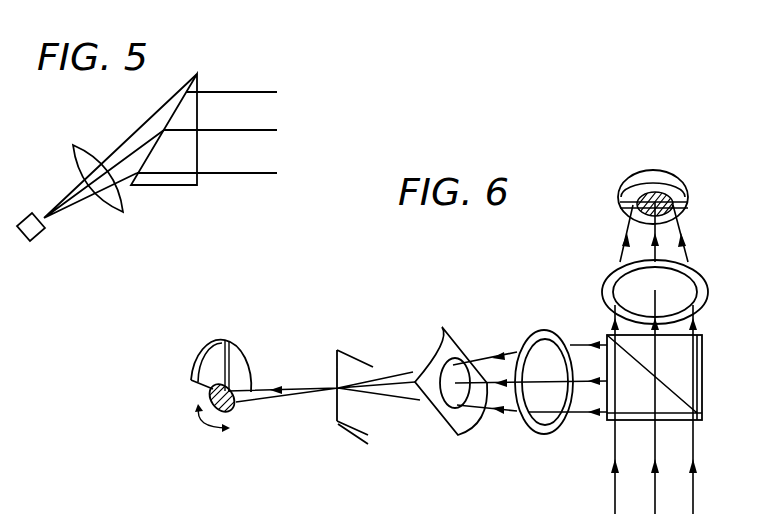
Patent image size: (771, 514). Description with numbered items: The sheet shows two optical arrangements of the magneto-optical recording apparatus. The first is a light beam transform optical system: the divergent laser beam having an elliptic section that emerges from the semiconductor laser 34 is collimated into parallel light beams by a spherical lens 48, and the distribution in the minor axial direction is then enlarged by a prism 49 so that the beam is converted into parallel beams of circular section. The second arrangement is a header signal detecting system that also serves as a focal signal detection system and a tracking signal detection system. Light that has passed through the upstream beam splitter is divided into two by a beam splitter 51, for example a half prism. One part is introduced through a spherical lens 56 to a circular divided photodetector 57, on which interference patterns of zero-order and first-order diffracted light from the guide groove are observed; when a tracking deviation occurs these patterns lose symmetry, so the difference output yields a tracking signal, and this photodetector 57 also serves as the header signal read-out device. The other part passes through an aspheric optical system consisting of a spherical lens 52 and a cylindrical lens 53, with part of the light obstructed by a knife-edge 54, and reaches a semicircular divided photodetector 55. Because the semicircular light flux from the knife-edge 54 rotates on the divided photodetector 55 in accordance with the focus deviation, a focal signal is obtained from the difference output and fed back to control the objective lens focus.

In FIG. 5, the semiconductor laser 34 is at (36, 238).
In FIG. 5, the spherical lens 48 is at (87, 147).
In FIG. 5, the prism 49 is at (200, 80).
In FIG. 6, the beam splitter 51 is at (703, 380).
In FIG. 6, the spherical lens 52 is at (548, 331).
In FIG. 6, the cylindrical lens 53 is at (445, 332).
In FIG. 6, the knife-edge 54 is at (352, 353).
In FIG. 6, the semicircular divided photodetector 55 is at (242, 347).
In FIG. 6, the spherical lens 56 is at (706, 288).
In FIG. 6, the circular divided photodetector 57 is at (690, 198).